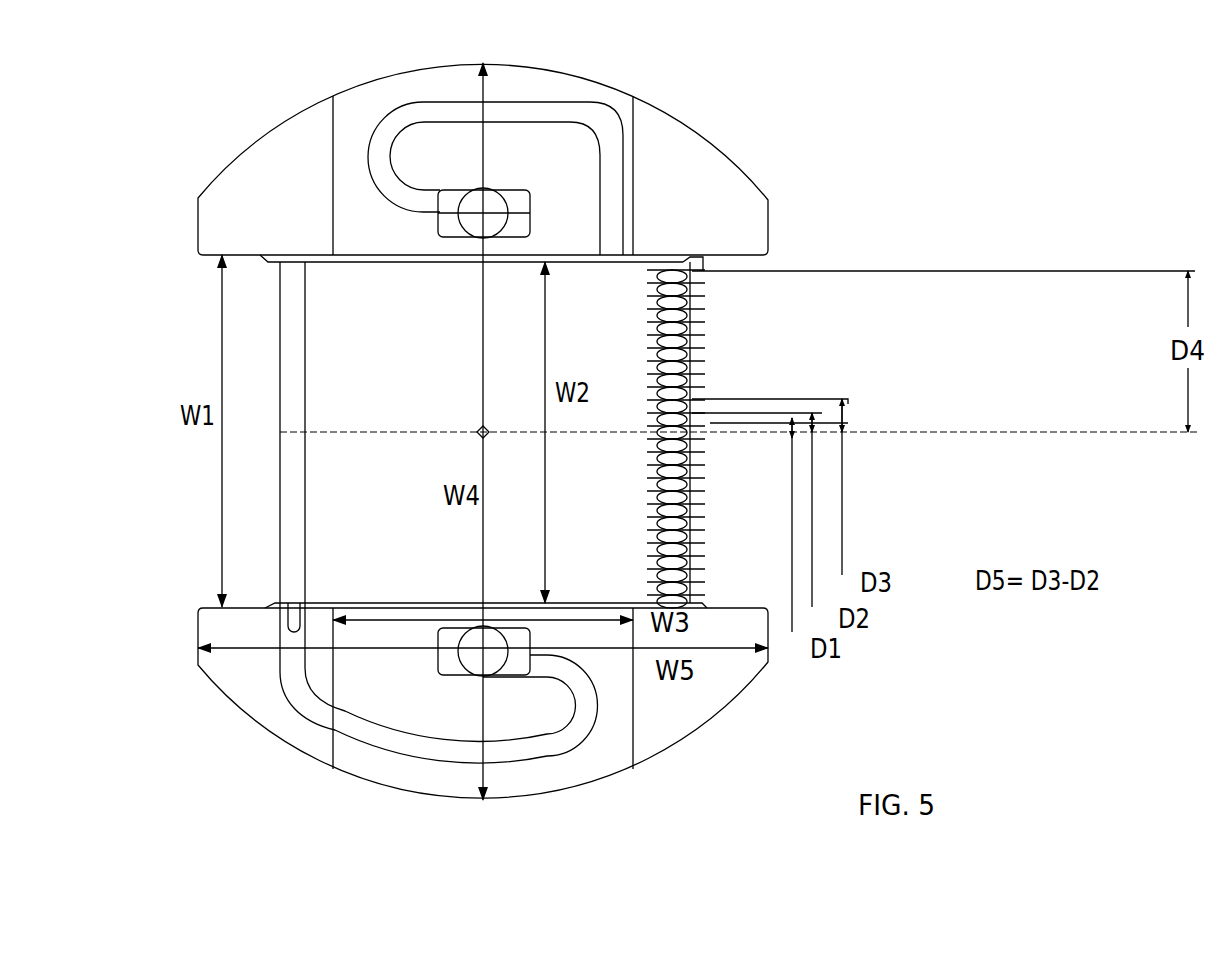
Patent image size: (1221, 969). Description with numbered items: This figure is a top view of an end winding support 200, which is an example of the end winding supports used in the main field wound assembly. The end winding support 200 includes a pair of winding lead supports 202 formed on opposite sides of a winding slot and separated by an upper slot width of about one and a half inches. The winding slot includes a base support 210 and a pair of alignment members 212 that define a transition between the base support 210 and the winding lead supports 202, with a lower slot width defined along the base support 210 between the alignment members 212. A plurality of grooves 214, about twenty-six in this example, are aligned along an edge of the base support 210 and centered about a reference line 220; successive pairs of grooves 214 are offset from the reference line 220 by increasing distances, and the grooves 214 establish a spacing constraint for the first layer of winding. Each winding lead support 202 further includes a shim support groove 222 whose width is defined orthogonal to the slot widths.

The end winding support 200 is at (784, 104).
The winding lead supports 202 is at (662, 138).
The base support 210 is at (447, 382).
The alignment members 212 is at (686, 258).
The grooves 214 is at (723, 367).
The reference line 220 is at (1015, 432).
The shim support groove 222 is at (385, 88).